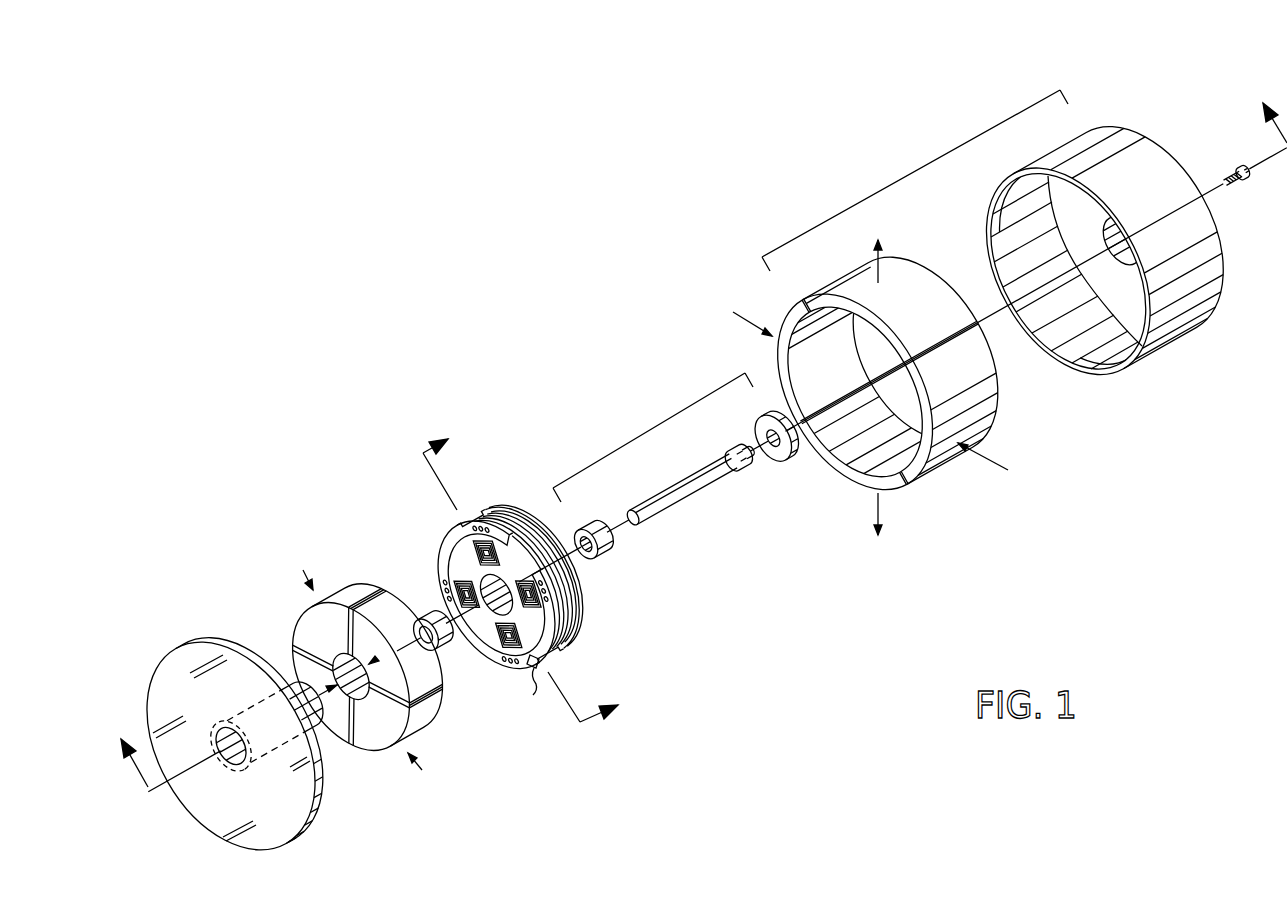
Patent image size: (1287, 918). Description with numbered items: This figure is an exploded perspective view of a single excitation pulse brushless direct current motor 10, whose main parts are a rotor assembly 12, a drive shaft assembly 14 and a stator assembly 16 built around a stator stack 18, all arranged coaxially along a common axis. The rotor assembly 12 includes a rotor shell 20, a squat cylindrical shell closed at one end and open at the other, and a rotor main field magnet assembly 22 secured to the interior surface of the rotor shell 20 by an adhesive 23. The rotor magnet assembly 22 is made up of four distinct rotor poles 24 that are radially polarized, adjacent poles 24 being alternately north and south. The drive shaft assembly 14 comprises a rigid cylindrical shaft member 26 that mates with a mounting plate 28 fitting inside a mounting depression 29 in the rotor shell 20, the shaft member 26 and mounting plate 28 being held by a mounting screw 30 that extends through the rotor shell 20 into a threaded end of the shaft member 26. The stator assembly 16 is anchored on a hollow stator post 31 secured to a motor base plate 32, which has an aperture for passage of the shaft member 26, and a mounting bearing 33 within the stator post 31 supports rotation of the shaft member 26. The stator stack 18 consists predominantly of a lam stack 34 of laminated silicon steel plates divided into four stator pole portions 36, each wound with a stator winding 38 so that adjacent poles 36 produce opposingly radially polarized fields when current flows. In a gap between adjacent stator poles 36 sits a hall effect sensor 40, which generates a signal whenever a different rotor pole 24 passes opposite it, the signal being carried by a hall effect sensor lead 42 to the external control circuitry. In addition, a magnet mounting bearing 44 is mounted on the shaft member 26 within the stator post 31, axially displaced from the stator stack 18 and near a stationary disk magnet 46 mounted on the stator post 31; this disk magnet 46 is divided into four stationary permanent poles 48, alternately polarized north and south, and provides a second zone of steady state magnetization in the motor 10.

The single excitation pulse brushless DC motor 10 is at (622, 236).
The rotor assembly 12 is at (903, 178).
The drive shaft assembly 14 is at (640, 436).
The stator assembly 16 is at (395, 494).
The stator stack 18 is at (503, 492).
The rotor shell 20 is at (1133, 160).
The rotor main field magnet assembly 22 is at (937, 478).
The adhesive 23 is at (986, 252).
The rotor poles 24 is at (897, 323).
The shaft member 26 is at (705, 488).
The mounting plate 28 is at (783, 460).
The mounting depression 29 is at (1118, 236).
The mounting screw 30 is at (1228, 176).
The stator post 31 is at (283, 688).
The motor base plate 32 is at (182, 708).
The mounting bearing 33 is at (606, 552).
The lam stack 34 is at (525, 520).
The stator pole portions 36 is at (448, 556).
The stator winding 38 is at (488, 634).
The hall effect sensor 40 is at (531, 661).
The hall effect sensor lead 42 is at (532, 686).
The magnet mounting bearing 44 is at (430, 616).
The stationary disk magnet 46 is at (424, 731).
The stationary permanent poles 48 is at (302, 652).